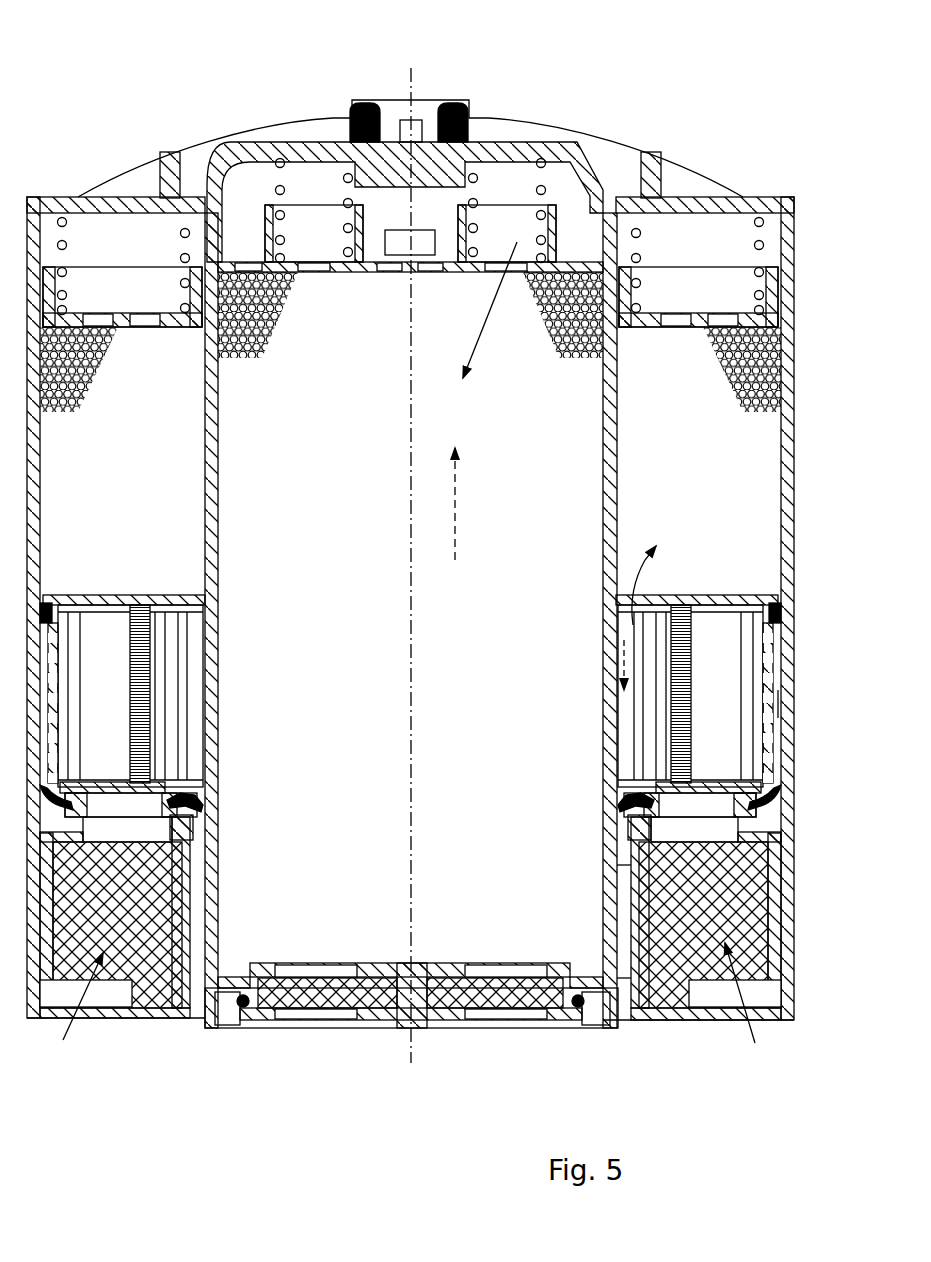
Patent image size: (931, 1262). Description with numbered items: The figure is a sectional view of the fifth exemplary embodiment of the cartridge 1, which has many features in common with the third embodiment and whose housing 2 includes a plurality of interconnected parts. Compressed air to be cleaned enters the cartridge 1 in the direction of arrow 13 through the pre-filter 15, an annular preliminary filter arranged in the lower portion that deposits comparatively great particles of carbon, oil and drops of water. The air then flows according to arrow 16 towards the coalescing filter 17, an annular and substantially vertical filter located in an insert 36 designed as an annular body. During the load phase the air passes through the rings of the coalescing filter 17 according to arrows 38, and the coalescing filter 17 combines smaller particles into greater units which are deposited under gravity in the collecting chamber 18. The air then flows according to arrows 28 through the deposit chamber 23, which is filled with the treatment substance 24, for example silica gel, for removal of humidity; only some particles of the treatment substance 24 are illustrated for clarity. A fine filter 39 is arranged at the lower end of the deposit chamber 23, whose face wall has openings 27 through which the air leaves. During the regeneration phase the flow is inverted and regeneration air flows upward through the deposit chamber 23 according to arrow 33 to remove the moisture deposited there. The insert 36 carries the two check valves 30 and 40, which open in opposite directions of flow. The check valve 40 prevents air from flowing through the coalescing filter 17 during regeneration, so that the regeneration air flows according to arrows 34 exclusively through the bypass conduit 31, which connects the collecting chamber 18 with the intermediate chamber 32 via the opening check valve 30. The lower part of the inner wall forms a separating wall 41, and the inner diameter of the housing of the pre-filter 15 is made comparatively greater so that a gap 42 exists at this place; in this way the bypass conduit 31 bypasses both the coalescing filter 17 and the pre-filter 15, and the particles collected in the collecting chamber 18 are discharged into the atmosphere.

The cartridge 1 is at (606, 100).
The housing 2 is at (762, 195).
The arrow 13 is at (87, 1000).
The pre-filter 15 is at (720, 888).
The arrow 16 is at (804, 693).
The coalescing filter 17 is at (730, 662).
The collecting chamber 18 is at (642, 762).
The deposit chamber 23 is at (533, 475).
The treatment substance 24 is at (257, 285).
The openings 27 is at (527, 1015).
The arrows 28 is at (667, 342).
The check valve 30 is at (637, 803).
The bypass conduit 31 is at (635, 812).
The intermediate chamber 32 is at (707, 823).
The arrow 33 is at (470, 560).
The arrows 34 is at (623, 653).
The insert 36 is at (737, 593).
The arrows 38 is at (647, 570).
The fine filter 39 is at (493, 1008).
The check valve 40 is at (749, 803).
The separating wall 41 is at (697, 863).
The gap 42 is at (625, 920).